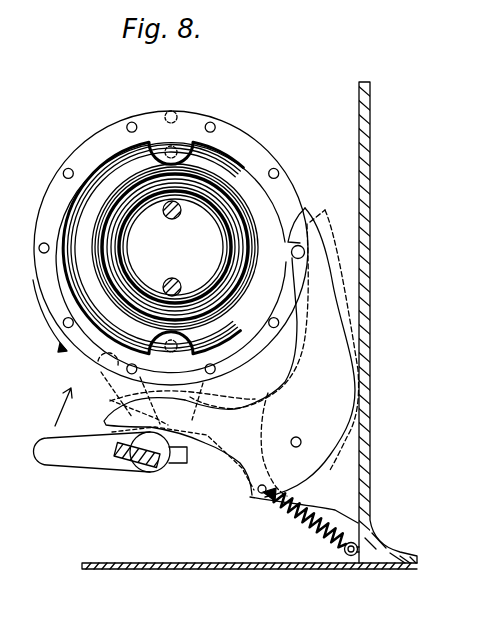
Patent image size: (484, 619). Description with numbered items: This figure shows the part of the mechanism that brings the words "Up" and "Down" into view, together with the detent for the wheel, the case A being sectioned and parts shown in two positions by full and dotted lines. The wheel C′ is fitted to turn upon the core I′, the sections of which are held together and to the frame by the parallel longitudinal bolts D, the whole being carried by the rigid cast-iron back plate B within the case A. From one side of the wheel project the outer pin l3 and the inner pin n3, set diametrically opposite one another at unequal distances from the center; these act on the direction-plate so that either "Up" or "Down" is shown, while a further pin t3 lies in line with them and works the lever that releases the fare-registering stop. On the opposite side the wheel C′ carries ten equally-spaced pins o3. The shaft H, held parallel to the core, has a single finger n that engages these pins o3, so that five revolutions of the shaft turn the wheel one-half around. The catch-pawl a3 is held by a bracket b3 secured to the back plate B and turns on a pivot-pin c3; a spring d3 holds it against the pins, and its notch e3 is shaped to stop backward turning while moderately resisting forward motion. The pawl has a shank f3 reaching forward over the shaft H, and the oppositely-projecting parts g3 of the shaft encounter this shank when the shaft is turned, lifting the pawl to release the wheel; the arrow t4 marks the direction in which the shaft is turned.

The wheel C′ is at (253, 143).
The pins o3 is at (163, 247).
The pin t3 is at (166, 152).
The outer pin l3 is at (175, 114).
The inner pin n3 is at (170, 352).
The core I′ is at (175, 247).
The longitudinal bolts D is at (175, 276).
The back plate B is at (386, 322).
The case A is at (249, 579).
The catch-pawl a3 is at (357, 362).
The notch e3 is at (292, 256).
The pivot-pin c3 is at (287, 444).
The bracket b3 is at (304, 498).
The spring d3 is at (308, 520).
The shank f3 is at (158, 420).
The finger n is at (92, 452).
The shaft H is at (147, 461).
The oppositely-projecting parts g3 is at (122, 452).
The direction arrow t4 is at (56, 407).